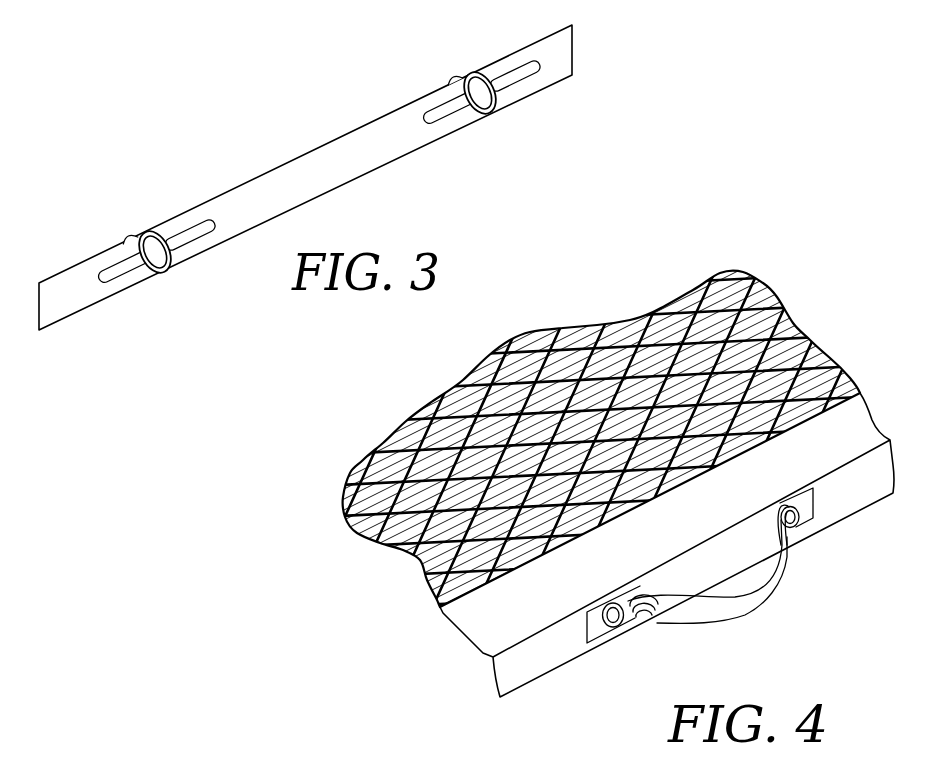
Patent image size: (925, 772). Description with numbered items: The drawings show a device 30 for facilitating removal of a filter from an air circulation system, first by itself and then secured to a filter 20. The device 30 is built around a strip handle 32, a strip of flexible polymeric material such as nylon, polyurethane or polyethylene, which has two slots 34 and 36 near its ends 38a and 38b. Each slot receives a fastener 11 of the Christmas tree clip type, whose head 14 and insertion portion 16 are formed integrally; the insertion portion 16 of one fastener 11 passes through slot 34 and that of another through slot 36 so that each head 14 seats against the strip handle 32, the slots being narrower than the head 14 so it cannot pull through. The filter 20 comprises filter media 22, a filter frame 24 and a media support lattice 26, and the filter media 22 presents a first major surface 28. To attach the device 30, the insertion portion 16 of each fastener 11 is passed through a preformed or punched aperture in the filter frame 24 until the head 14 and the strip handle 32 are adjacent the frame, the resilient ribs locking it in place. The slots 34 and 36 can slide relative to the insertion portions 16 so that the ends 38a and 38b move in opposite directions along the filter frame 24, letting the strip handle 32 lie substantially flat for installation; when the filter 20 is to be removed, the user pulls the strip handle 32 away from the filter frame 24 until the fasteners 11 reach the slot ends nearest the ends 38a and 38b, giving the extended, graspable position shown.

In FIG. 3, the device 30 is at (158, 78).
In FIG. 4, the device 30 is at (793, 610).
In FIG. 3, the strip handle 32 is at (302, 168).
In FIG. 4, the strip handle 32 is at (748, 603).
In FIG. 3, the slot 34 is at (108, 278).
In FIG. 4, the slot 34 is at (647, 620).
In FIG. 3, the slot 36 is at (433, 120).
In FIG. 4, the slot 36 is at (777, 553).
In FIG. 3, the head 14 is at (160, 257).
In FIG. 3, the fastener 11 is at (157, 286).
In FIG. 4, the fastener 11 is at (617, 622).
In FIG. 3, the insertion portion 16 is at (133, 235).
In FIG. 4, the filter 20 is at (850, 327).
In FIG. 4, the filter media 22 is at (569, 414).
In FIG. 4, the media support lattice 26 is at (766, 302).
In FIG. 4, the first major surface 28 is at (438, 556).
In FIG. 4, the filter frame 24 is at (517, 622).
In FIG. 4, the end 38a is at (582, 625).
In FIG. 4, the end 38b is at (813, 500).